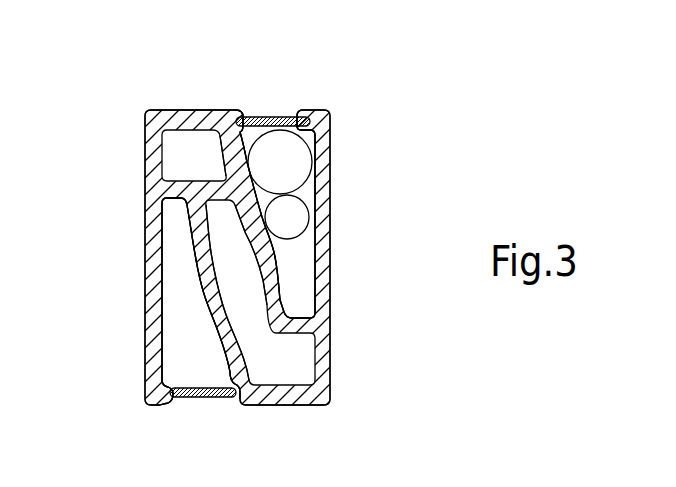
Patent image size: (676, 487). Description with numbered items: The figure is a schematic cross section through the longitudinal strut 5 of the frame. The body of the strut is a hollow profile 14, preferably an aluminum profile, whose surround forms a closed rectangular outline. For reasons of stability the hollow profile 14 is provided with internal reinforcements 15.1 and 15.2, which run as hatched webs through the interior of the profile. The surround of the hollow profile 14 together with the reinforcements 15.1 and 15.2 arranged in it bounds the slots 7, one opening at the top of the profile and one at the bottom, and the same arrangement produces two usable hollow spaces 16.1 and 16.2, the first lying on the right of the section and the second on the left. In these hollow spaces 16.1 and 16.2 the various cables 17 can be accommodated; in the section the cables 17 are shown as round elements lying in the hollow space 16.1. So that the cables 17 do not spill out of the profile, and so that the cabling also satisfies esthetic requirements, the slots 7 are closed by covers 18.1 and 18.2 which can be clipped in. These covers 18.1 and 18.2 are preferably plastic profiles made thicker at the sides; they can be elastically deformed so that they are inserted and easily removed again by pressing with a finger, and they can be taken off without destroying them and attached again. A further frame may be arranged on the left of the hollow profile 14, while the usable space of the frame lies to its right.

The longitudinal strut 5 is at (79, 133).
The slots 7 is at (267, 90).
The hollow profile 14 is at (344, 203).
The reinforcement 15.1 is at (228, 168).
The reinforcement 15.2 is at (195, 217).
The hollow space 16.1 is at (300, 285).
The hollow space 16.2 is at (177, 305).
The cables 17 is at (293, 157).
The cover 18.1 is at (290, 112).
The cover 18.2 is at (215, 398).